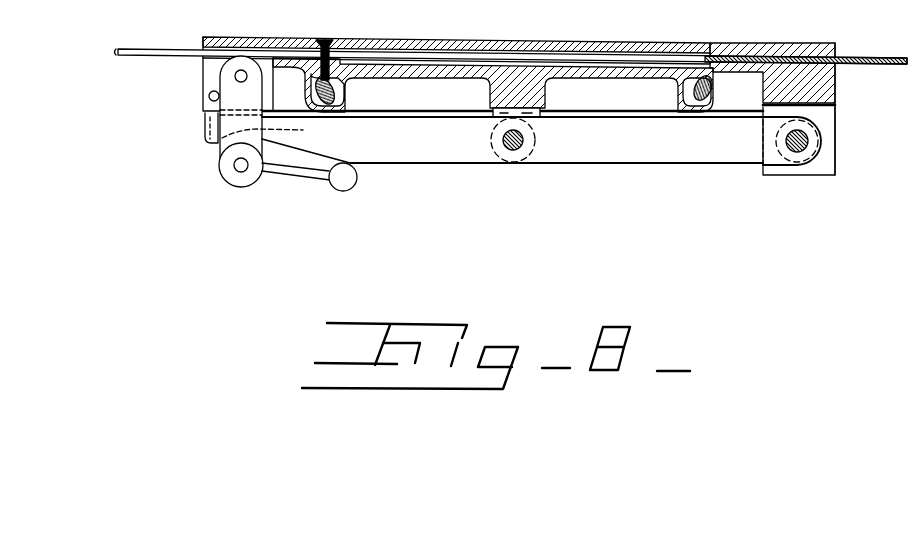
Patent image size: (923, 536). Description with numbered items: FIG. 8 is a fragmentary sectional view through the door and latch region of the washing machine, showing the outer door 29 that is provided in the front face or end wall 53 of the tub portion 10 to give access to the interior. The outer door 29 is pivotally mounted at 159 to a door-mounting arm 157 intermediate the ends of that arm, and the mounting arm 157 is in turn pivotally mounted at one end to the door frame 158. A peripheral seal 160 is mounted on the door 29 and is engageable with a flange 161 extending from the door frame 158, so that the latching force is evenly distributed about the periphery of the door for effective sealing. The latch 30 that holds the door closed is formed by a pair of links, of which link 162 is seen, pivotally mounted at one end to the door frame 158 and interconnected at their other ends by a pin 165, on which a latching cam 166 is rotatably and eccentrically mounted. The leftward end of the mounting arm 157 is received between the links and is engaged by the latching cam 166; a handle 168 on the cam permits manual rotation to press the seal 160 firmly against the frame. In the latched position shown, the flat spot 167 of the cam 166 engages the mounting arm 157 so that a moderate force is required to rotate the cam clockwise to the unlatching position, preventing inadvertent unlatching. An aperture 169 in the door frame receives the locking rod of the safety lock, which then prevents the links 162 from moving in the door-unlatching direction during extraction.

The tub portion 10 is at (120, 55).
The outer door 29 is at (440, 66).
The latch 30 is at (225, 128).
The front face or end wall 53 is at (152, 47).
The door-mounting arm 157 is at (601, 158).
The door frame 158 is at (832, 120).
The pivot of outer door on mounting arm 159 is at (506, 158).
The peripheral seal 160 is at (328, 74).
The flange 161 is at (320, 41).
The link 162 is at (231, 150).
The pin 165 is at (240, 169).
The latching cam 166 is at (219, 172).
The flat spot 167 is at (280, 132).
The handle 168 is at (334, 187).
The aperture 169 is at (209, 95).